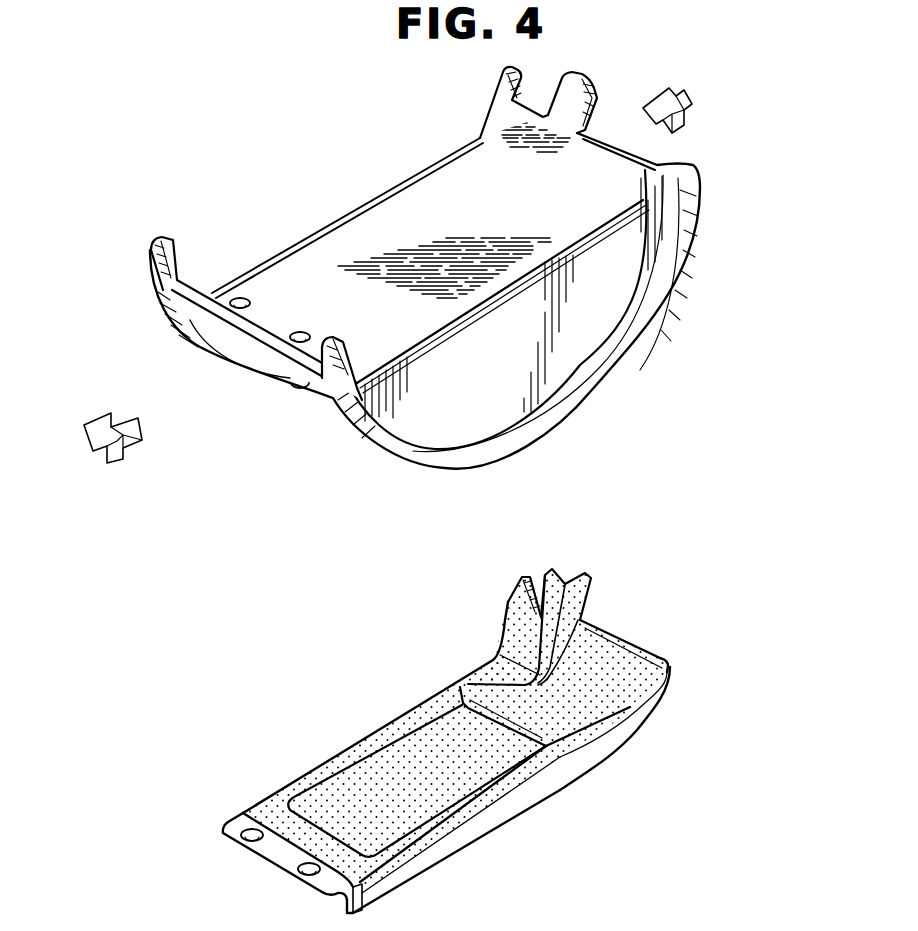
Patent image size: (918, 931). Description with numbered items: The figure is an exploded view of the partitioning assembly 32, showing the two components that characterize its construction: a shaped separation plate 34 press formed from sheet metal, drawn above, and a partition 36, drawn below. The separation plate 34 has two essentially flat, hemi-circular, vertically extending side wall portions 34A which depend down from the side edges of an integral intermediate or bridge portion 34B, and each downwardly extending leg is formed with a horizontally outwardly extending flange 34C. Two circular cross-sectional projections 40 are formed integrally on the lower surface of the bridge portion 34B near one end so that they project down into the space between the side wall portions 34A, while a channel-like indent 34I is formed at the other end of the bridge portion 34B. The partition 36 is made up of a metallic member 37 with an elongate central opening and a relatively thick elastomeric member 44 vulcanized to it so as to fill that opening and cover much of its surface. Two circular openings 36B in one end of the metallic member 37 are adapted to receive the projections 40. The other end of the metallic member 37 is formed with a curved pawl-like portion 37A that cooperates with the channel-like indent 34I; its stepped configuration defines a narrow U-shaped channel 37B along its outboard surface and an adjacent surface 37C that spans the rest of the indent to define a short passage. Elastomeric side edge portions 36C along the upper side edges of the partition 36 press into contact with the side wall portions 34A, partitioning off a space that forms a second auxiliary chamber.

The partitioning assembly 32 is at (728, 166).
The separation plate 34 is at (371, 183).
The side wall portions 34A is at (567, 353).
The intermediate portion 34B is at (340, 240).
The flange 34C is at (493, 101).
The channel-like indent 34I is at (606, 138).
The projections 40 is at (300, 385).
The partition 36 is at (507, 822).
The circular openings 36B is at (296, 866).
The elastomeric side edge portions 36C is at (553, 767).
The elastomeric member 44 is at (380, 782).
The metallic member 37 is at (622, 745).
The curved pawl-like portion 37A is at (671, 688).
The narrow U-shaped channel 37B is at (534, 580).
The adjacent surface 37C is at (622, 657).